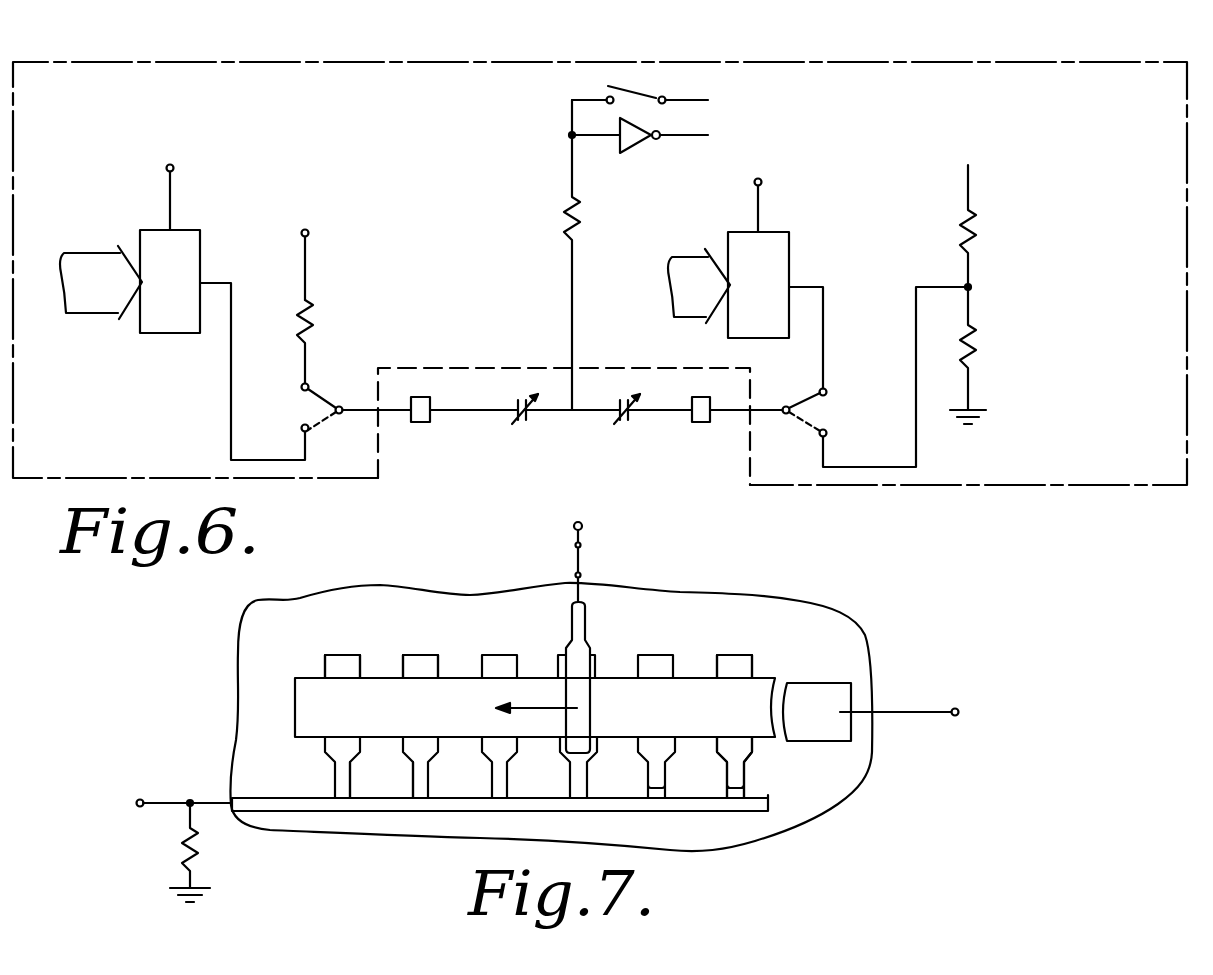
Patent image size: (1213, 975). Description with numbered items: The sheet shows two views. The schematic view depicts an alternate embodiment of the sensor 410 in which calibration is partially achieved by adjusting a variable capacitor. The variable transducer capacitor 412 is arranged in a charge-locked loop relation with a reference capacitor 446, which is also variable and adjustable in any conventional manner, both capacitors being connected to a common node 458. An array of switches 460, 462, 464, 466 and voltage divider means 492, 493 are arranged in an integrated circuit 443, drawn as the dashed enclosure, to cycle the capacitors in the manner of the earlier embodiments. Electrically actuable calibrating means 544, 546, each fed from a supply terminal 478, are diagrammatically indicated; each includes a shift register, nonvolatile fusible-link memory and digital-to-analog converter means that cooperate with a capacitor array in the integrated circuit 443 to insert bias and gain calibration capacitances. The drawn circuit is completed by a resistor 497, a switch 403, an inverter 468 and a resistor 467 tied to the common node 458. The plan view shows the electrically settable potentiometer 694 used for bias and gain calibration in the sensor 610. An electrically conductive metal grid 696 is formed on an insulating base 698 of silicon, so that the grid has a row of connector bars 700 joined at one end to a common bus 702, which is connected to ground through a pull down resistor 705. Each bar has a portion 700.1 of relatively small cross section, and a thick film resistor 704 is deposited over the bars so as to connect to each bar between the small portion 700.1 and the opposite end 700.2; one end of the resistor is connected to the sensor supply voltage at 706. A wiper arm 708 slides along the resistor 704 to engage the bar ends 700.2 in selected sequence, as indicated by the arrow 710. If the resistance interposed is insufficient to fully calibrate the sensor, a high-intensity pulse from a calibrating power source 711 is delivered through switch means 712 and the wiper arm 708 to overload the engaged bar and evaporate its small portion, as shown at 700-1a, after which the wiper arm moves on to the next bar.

In FIG. 6, the sensor 410 is at (1104, 63).
In FIG. 6, the integrated circuit 443 is at (748, 63).
In FIG. 6, the voltage supply terminal 478 is at (173, 171).
In FIG. 6, the electrically actuable calibrating means 544 is at (200, 246).
In FIG. 6, the electrically actuable calibrating means 546 is at (789, 262).
In FIG. 6, the resistor 497 is at (313, 325).
In FIG. 6, the switch 460 is at (308, 386).
In FIG. 6, the switch 464 is at (308, 431).
In FIG. 6, the common node 458 is at (572, 412).
In FIG. 6, the reference capacitor 446 is at (522, 418).
In FIG. 6, the variable transducer capacitor 412 is at (624, 403).
In FIG. 6, the resistor 467 is at (581, 214).
In FIG. 6, the switch 403 is at (640, 96).
In FIG. 6, the inverter 468 is at (628, 146).
In FIG. 6, the switch 466 is at (826, 392).
In FIG. 6, the switch 462 is at (821, 434).
In FIG. 6, the voltage divider means 492 is at (976, 226).
In FIG. 6, the voltage divider means 493 is at (976, 351).
In FIG. 7, the sensor 610 is at (777, 583).
In FIG. 7, the potentiometer 694 is at (764, 664).
In FIG. 7, the insulating base 698 is at (818, 804).
In FIG. 7, the common bus 702 is at (717, 805).
In FIG. 7, the pull down resistor 705 is at (197, 858).
In FIG. 7, the thick film resistor 704 is at (758, 692).
In FIG. 7, the sensor supply voltage connection 706 is at (957, 708).
In FIG. 7, the connector bars 700 is at (418, 658).
In FIG. 7, the opposite end of connector bar 700.2 is at (327, 663).
In FIG. 7, the small cross-section portion of connector bar 700.1 is at (437, 652).
In FIG. 7, the electrically conductive metal grid 696 is at (740, 657).
In FIG. 7, the evaporated bar portion 700-1a is at (747, 781).
In FIG. 7, the wiper arm 708 is at (580, 650).
In FIG. 7, the arrow 710 is at (523, 708).
In FIG. 7, the switch means 712 is at (581, 568).
In FIG. 7, the calibrating power source 711 is at (582, 529).